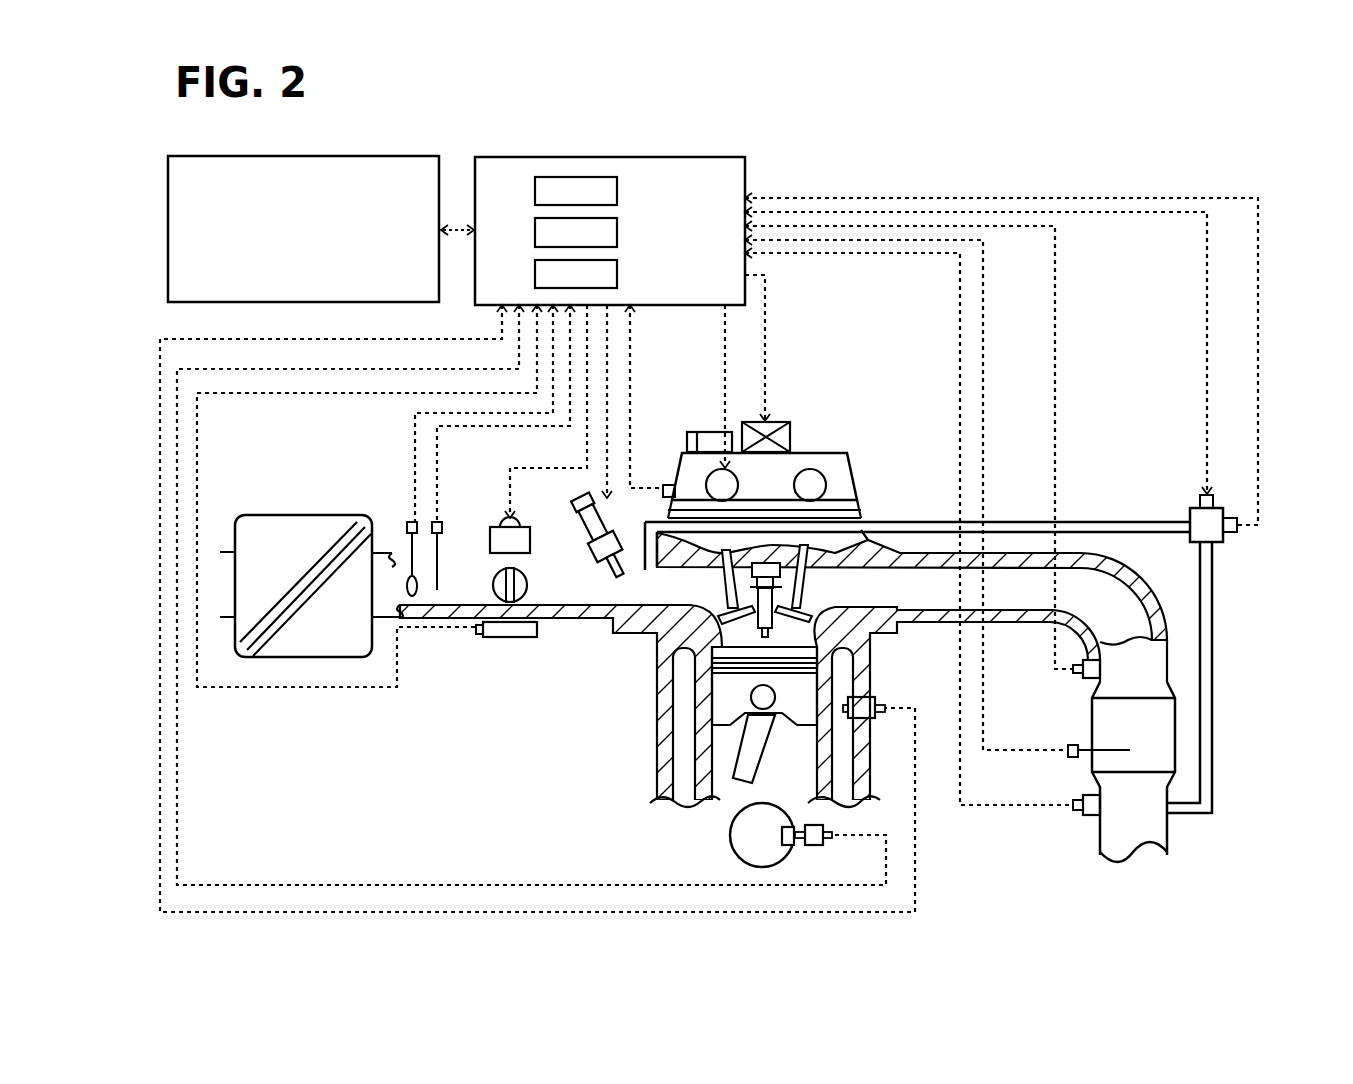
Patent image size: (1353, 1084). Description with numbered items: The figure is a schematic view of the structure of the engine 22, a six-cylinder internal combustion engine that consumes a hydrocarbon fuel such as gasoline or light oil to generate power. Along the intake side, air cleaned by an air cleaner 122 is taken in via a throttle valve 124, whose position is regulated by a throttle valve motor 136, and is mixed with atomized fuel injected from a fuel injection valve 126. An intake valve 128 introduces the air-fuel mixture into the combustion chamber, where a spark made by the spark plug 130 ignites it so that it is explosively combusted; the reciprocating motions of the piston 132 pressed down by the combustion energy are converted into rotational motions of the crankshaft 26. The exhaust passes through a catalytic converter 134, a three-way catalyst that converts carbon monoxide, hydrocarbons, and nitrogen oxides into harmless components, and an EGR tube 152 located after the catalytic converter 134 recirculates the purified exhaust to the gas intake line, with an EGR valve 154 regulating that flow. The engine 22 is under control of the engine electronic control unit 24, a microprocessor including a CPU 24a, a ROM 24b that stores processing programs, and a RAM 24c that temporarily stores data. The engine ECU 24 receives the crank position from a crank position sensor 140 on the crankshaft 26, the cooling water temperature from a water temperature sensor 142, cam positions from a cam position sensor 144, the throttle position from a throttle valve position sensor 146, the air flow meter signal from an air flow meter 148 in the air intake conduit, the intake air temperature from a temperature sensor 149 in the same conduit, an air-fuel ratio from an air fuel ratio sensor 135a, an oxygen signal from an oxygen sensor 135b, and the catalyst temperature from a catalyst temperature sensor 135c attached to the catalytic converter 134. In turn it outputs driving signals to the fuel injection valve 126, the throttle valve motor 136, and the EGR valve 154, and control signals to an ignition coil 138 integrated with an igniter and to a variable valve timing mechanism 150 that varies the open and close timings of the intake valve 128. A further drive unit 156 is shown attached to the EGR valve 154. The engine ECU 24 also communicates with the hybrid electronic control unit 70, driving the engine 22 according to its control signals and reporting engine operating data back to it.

The engine 22 is at (823, 396).
The engine electronic control unit 24 is at (613, 208).
The CPU 24a is at (617, 192).
The ROM 24b is at (617, 232).
The RAM 24c is at (617, 272).
The crankshaft 26 is at (730, 835).
The hybrid electronic control unit 70 is at (305, 156).
The air cleaner 122 is at (303, 515).
The throttle valve 124 is at (545, 530).
The fuel injection valve 126 is at (582, 560).
The intake valve 128 is at (728, 608).
The spark plug 130 is at (800, 612).
The piston 132 is at (730, 697).
The catalytic converter 134 is at (1112, 733).
The air fuel ratio sensor 135a is at (1095, 680).
The oxygen sensor 135b is at (1092, 817).
The catalyst temperature sensor 135c is at (1070, 760).
The throttle valve motor 136 is at (493, 520).
The ignition coil 138 is at (790, 437).
The crank position sensor 140 is at (815, 846).
The water temperature sensor 142 is at (872, 697).
The cam position sensor 144 is at (672, 484).
The throttle valve position sensor 146 is at (513, 638).
The air flow meter 148 is at (408, 522).
The temperature sensor 149 is at (440, 524).
The variable valve timing mechanism 150 is at (868, 472).
The EGR tube 152 is at (1213, 668).
The EGR valve 154 is at (1195, 503).
The stepping motor 156 is at (1228, 535).